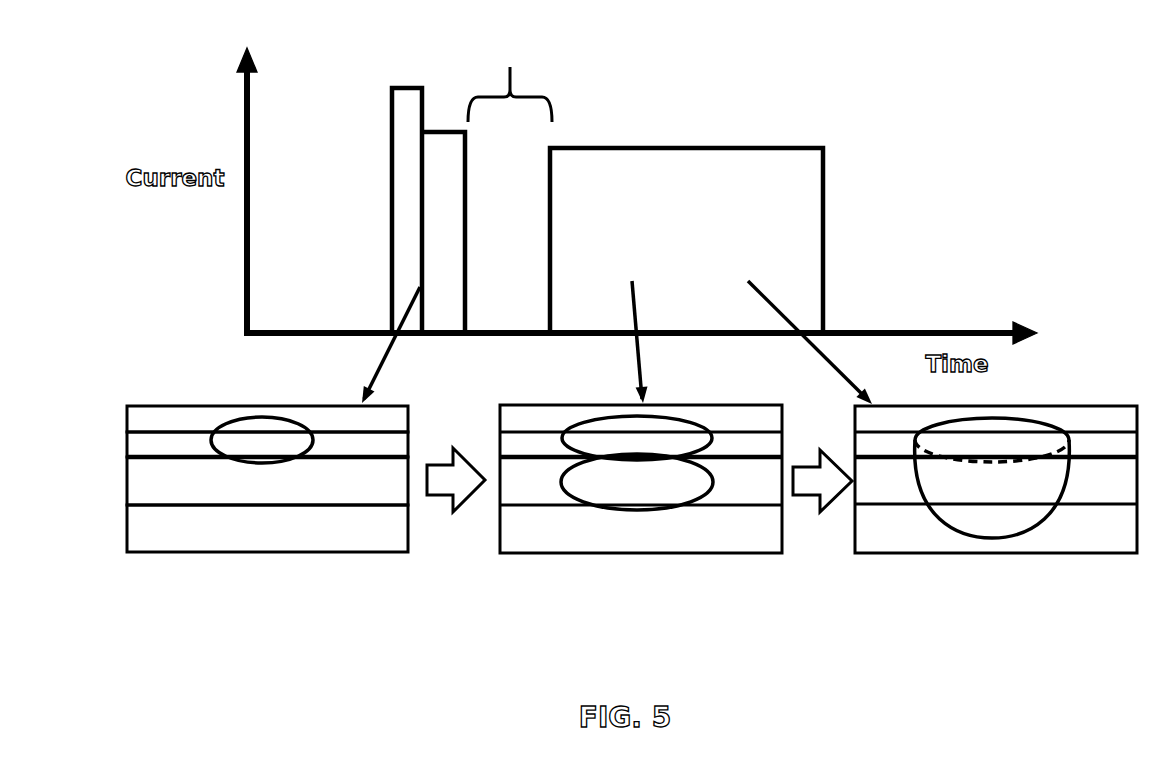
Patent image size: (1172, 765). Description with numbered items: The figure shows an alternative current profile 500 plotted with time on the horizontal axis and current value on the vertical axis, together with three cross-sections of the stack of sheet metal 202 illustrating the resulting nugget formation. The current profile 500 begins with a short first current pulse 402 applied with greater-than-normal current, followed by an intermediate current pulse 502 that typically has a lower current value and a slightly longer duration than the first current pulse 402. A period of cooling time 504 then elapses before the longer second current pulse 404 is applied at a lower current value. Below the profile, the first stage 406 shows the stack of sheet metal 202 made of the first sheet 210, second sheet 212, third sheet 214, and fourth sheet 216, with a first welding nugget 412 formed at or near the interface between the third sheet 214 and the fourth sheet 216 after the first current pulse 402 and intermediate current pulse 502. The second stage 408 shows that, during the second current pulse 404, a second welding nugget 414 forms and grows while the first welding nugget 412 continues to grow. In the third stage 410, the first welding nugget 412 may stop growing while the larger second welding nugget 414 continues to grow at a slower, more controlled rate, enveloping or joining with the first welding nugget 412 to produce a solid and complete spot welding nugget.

The stack of sheet metal 202 is at (229, 451).
The first sheet 210 is at (148, 533).
The second sheet 212 is at (148, 478).
The third sheet 214 is at (143, 443).
The fourth sheet 216 is at (140, 417).
The first current pulse 402 is at (403, 118).
The second current pulse 404 is at (770, 180).
The first stage 406 is at (234, 479).
The second stage 408 is at (717, 576).
The third stage 410 is at (1070, 576).
The first welding nugget 412 is at (275, 428).
The second welding nugget 414 is at (633, 497).
The current profile 500 is at (643, 677).
The intermediate current pulse 502 is at (440, 140).
The period of cooling time 504 is at (510, 70).